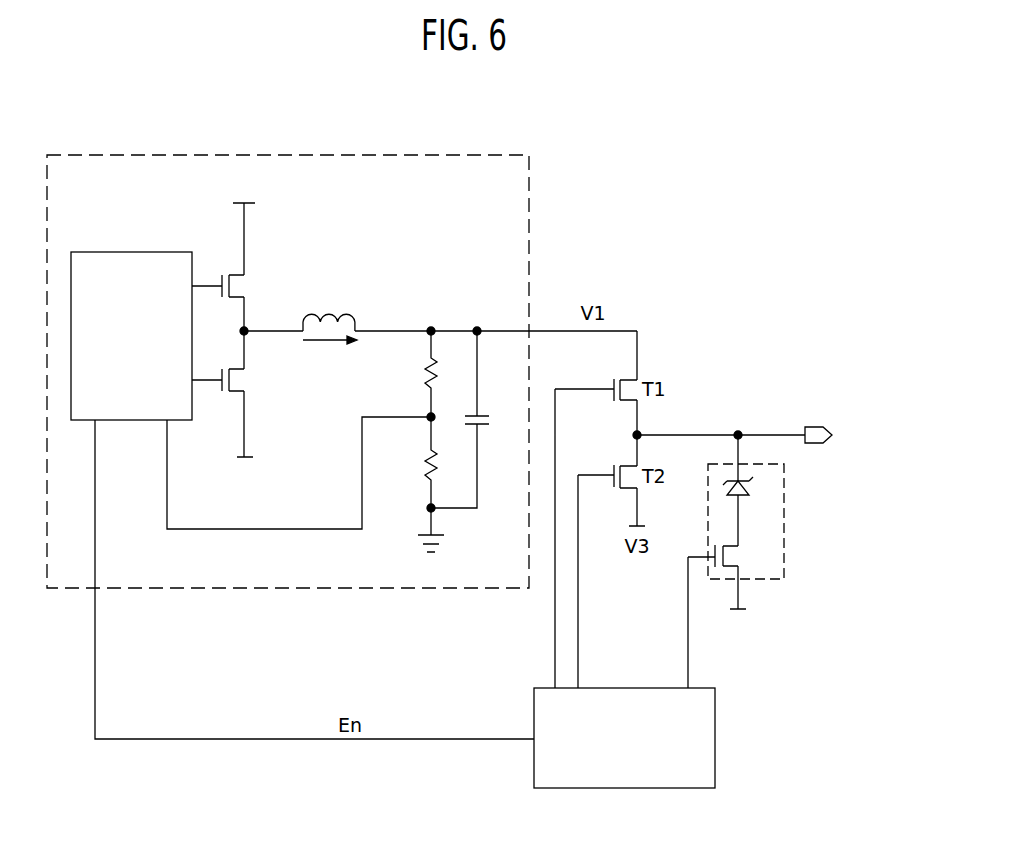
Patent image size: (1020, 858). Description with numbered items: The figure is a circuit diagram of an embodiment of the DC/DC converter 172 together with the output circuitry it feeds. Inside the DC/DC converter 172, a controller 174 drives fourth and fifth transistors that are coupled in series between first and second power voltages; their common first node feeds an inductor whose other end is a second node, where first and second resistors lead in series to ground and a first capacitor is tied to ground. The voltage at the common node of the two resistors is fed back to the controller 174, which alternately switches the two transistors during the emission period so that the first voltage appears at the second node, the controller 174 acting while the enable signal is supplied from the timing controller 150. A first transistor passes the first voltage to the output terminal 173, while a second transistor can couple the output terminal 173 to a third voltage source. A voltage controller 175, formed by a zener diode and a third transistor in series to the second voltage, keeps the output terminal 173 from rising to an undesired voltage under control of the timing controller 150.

The DC/DC converter 172 is at (388, 155).
The controller 174 is at (116, 251).
The output terminal 173 is at (816, 427).
The voltage controller 175 is at (784, 518).
The timing controller 150 is at (622, 688).